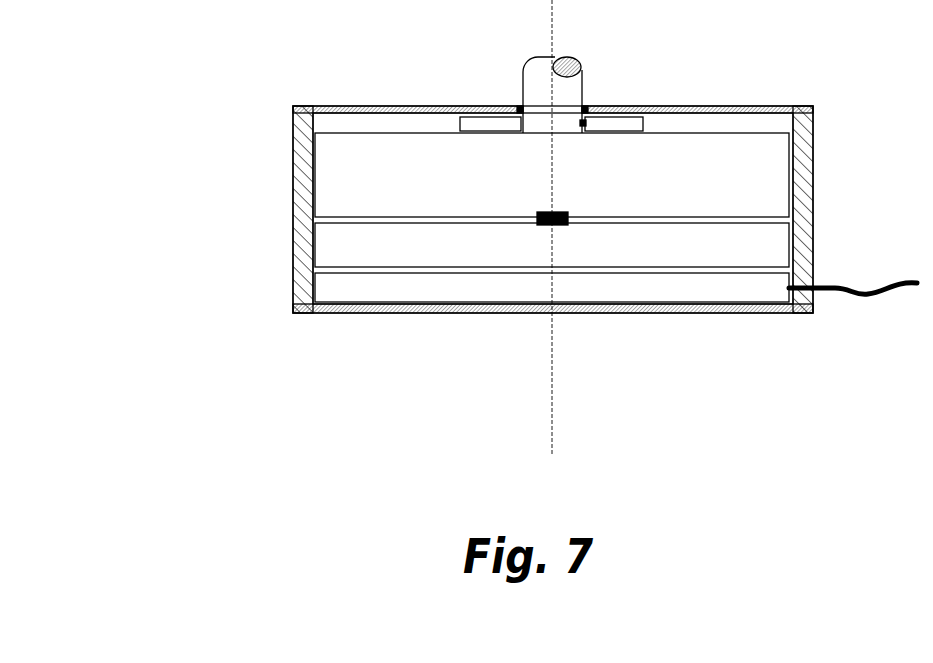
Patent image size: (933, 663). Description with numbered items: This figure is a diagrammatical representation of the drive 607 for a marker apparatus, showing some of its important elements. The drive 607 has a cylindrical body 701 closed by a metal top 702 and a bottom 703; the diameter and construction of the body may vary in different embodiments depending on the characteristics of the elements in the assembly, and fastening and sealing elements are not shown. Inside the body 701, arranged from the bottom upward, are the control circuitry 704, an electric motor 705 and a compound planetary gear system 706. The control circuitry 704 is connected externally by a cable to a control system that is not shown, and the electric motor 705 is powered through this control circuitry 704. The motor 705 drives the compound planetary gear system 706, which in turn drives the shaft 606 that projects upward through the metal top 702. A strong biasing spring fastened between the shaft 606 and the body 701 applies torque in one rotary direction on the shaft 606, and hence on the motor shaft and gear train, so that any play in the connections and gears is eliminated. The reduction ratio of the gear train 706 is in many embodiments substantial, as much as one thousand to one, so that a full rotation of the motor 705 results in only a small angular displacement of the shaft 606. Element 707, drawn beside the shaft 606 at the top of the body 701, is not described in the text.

The drive 607 is at (236, 208).
The shaft 606 is at (530, 80).
The cylindrical body 701 is at (292, 170).
The metal top 702 is at (350, 104).
The bottom 703 is at (362, 313).
The control circuitry 704 is at (456, 289).
The electric motor 705 is at (780, 250).
The compound planetary gear system 706 is at (777, 168).
The bearing 707 is at (613, 119).